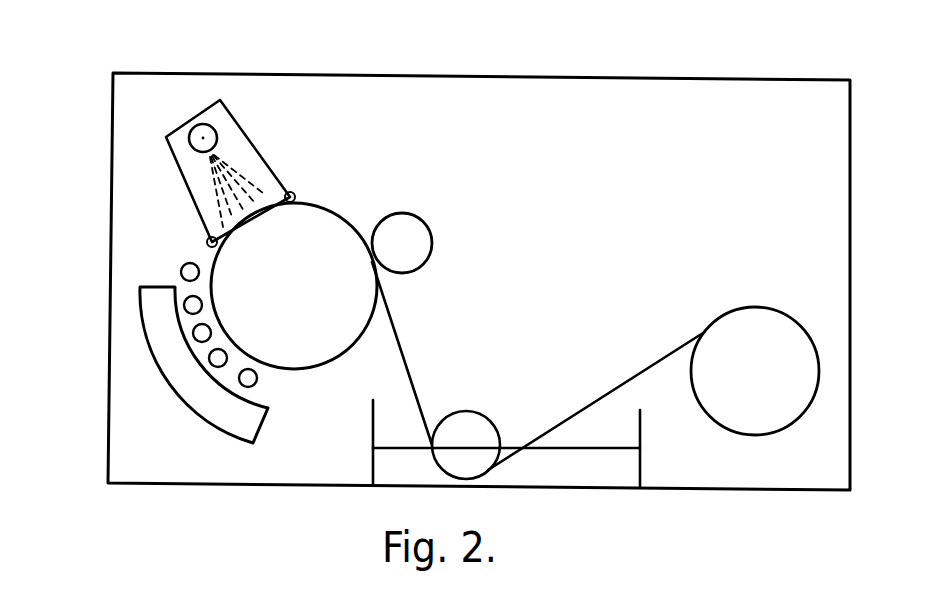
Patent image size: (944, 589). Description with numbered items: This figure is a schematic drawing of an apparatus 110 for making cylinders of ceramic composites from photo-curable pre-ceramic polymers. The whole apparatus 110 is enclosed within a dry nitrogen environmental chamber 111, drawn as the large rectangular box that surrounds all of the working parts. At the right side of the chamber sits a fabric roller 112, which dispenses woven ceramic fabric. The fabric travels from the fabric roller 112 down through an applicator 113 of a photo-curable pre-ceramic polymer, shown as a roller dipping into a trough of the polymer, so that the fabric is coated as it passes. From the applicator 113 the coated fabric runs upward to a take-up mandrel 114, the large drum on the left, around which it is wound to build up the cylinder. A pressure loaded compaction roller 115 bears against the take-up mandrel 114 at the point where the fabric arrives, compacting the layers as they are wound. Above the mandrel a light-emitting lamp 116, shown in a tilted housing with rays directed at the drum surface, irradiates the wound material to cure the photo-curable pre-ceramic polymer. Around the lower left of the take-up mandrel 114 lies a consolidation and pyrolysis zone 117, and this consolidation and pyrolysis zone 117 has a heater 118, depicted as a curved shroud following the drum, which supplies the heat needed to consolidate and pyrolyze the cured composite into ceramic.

The apparatus 110 is at (683, 76).
The dry nitrogen environmental chamber 111 is at (610, 473).
The fabric roller 112 is at (800, 362).
The applicator 113 is at (466, 445).
The take-up mandrel 114 is at (325, 227).
The pressure loaded compaction roller 115 is at (385, 227).
The light-emitting lamp 116 is at (166, 138).
The consolidation and pyrolysis zone 117 is at (173, 263).
The heater 118 is at (198, 332).